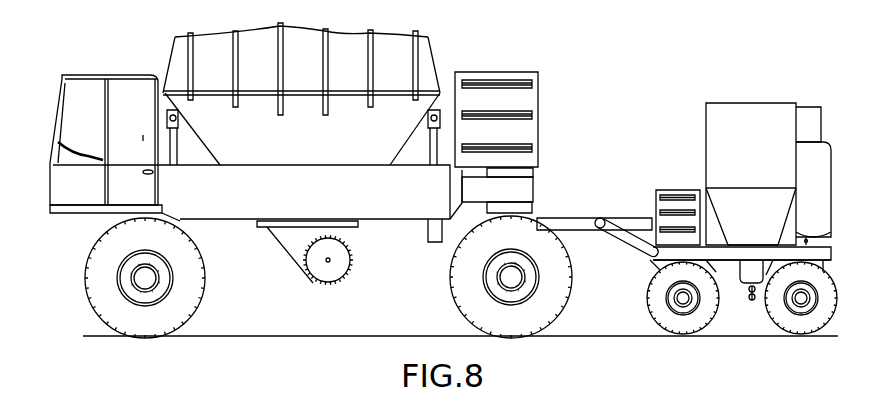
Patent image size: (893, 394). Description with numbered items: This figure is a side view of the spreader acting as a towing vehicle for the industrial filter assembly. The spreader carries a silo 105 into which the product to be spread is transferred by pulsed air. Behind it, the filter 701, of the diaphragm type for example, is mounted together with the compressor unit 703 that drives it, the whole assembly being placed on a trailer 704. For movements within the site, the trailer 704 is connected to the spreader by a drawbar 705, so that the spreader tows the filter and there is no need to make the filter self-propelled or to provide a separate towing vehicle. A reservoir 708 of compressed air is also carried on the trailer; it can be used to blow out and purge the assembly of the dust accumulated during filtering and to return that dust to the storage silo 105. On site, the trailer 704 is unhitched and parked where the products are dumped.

The silo 105 is at (425, 42).
The filter 701 is at (740, 118).
The compressor unit 703 is at (683, 200).
The trailer 704 is at (726, 252).
The drawbar 705 is at (574, 228).
The reservoir 708 is at (780, 113).